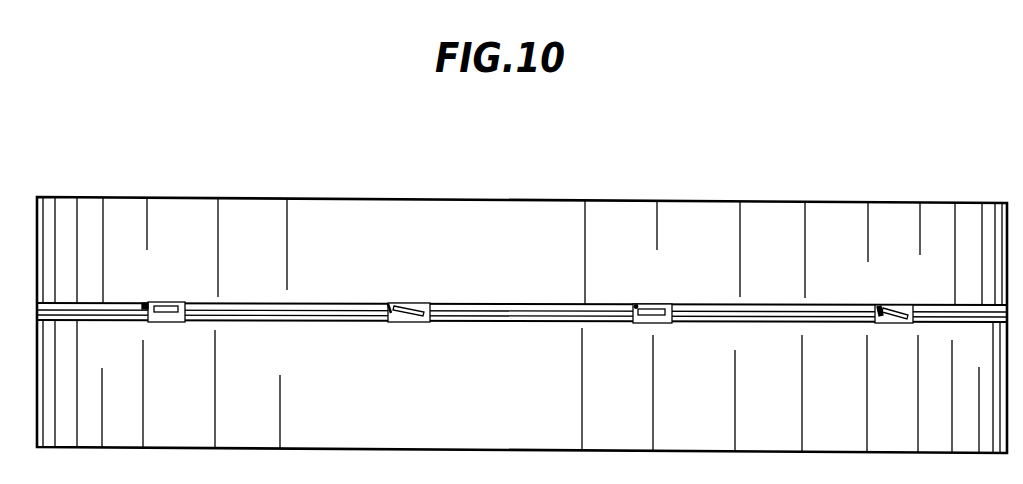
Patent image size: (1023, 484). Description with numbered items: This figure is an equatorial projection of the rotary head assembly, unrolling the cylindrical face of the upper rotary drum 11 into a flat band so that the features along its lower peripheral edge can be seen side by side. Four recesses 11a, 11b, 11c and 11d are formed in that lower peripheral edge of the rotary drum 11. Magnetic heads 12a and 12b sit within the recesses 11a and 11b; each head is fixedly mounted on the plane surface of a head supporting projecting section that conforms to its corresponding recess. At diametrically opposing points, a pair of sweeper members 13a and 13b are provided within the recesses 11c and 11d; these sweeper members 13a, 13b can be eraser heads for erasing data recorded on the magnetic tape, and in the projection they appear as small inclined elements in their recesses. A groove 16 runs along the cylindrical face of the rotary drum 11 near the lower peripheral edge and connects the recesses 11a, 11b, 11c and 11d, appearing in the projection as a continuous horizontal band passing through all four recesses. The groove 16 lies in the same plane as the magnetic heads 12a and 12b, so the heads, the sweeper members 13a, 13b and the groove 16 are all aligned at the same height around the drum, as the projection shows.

The upper rotary drum 11 is at (752, 188).
The recess 11a is at (635, 305).
The recess 11b is at (143, 302).
The recess 11c is at (877, 306).
The recess 11d is at (388, 305).
The magnetic head 12a is at (660, 306).
The magnetic head 12b is at (176, 304).
The sweeper member 13a is at (900, 306).
The sweeper member 13b is at (410, 305).
The groove 16 is at (100, 310).